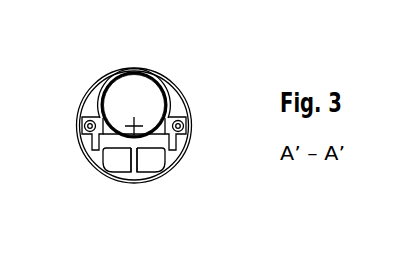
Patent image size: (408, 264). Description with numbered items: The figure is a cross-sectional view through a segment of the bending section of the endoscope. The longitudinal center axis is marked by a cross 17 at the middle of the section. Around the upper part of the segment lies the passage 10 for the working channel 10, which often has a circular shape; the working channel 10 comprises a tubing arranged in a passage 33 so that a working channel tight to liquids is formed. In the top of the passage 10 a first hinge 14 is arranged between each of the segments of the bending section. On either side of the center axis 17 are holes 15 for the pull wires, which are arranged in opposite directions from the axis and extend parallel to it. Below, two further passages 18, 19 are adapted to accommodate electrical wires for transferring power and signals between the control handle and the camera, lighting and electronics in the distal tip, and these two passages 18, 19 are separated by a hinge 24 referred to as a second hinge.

The working channel 10 is at (167, 87).
The first hinge 14 is at (140, 71).
The passage 33 is at (130, 98).
The cross 17 is at (134, 126).
The holes 15 is at (88, 124).
The passage 18 is at (115, 165).
The passage 19 is at (152, 160).
The second hinge 24 is at (135, 162).